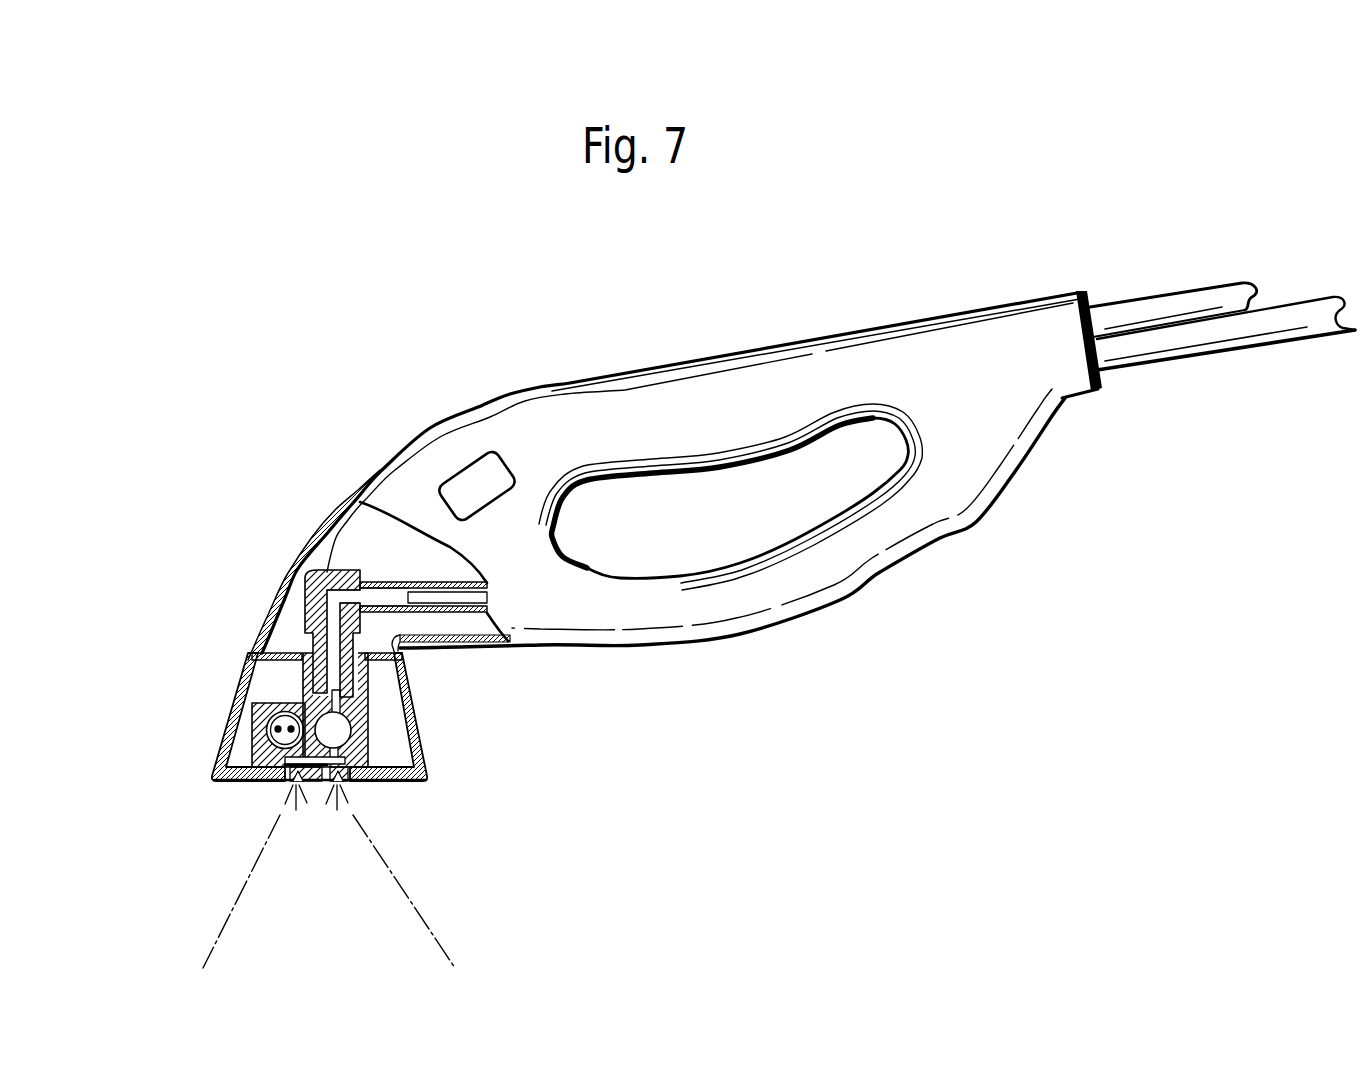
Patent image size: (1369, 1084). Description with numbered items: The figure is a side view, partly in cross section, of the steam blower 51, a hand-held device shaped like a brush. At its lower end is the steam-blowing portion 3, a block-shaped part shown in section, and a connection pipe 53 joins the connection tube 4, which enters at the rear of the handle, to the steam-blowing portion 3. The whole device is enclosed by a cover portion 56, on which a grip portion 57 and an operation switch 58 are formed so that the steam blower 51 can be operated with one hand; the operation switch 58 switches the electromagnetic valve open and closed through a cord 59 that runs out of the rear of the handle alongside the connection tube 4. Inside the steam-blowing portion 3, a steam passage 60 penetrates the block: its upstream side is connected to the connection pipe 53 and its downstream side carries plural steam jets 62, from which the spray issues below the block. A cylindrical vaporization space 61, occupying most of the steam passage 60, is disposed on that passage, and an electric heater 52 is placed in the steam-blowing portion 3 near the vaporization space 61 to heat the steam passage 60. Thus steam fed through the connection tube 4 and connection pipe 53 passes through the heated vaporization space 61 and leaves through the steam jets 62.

The steam-blowing portion 3 is at (248, 726).
The connection tube 4 is at (1262, 347).
The steam blower 51 is at (633, 371).
The electric heater 52 is at (283, 703).
The connection pipe 53 is at (416, 582).
The cover portion 56 is at (290, 562).
The grip portion 57 is at (727, 390).
The operation switch 58 is at (477, 452).
The cord 59 is at (1158, 315).
The steam passage 60 is at (366, 693).
The vaporization space 61 is at (338, 731).
The steam jets 62 is at (285, 781).